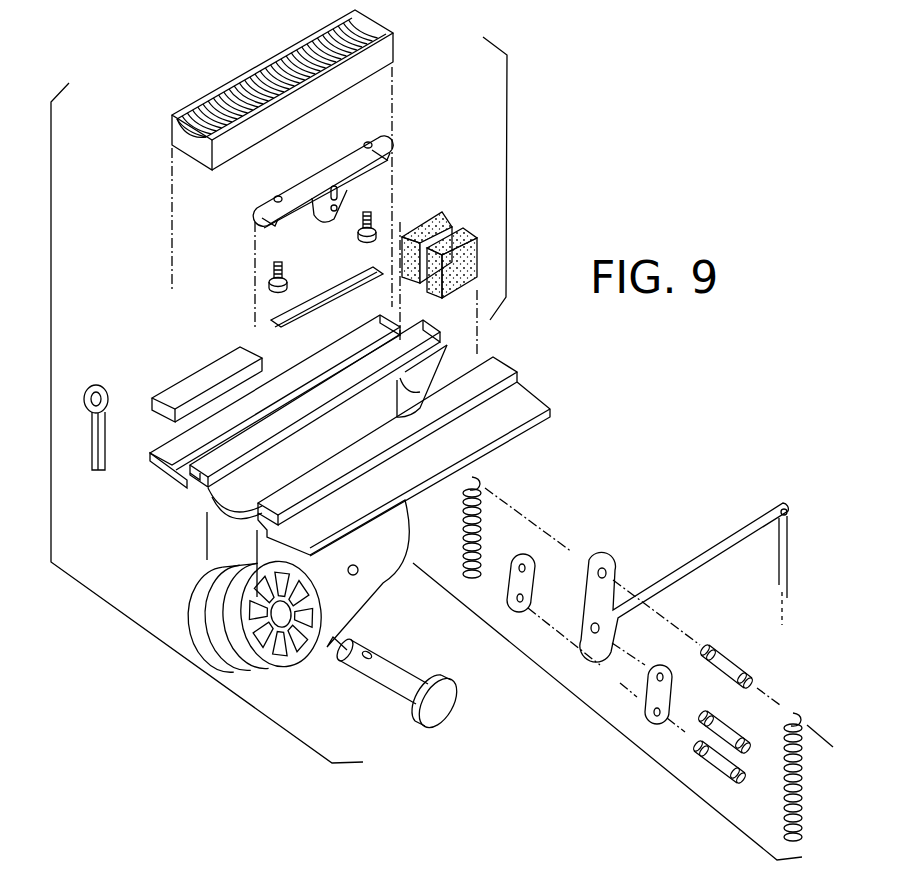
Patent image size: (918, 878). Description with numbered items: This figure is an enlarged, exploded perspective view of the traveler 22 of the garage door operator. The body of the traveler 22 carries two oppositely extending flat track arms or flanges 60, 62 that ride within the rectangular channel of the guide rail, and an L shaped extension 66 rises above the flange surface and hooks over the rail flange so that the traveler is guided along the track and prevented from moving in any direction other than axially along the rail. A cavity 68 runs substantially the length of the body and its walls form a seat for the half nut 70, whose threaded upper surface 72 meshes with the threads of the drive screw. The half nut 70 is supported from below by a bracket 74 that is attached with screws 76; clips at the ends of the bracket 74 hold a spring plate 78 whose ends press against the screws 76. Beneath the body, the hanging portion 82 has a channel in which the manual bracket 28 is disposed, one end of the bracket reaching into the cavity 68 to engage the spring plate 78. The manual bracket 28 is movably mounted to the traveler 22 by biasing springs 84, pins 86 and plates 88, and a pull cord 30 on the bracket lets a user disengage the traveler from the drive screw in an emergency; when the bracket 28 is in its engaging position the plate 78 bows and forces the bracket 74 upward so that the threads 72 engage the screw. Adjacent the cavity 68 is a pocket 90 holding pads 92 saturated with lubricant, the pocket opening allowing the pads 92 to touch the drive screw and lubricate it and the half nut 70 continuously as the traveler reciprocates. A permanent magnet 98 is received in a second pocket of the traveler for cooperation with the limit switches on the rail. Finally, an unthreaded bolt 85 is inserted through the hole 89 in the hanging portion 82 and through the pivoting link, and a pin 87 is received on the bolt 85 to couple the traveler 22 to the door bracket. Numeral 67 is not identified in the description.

The traveler 22 is at (90, 596).
The manual bracket 28 is at (702, 567).
The pull cord 30 is at (785, 558).
The flat track arm 60 is at (173, 458).
The flat track arm 62 is at (498, 433).
The L shaped extension 66 is at (212, 457).
The front rail 67 is at (343, 468).
The cavity 68 is at (203, 511).
The half nut 70 is at (253, 138).
The upper surface 72 is at (245, 82).
The bracket 74 is at (322, 171).
The screws 76 is at (285, 267).
The spring plate 78 is at (312, 312).
The hanging portion 82 is at (313, 657).
The biasing springs 84 is at (463, 528).
The unthreaded bolt 85 is at (397, 670).
The pins 86 is at (735, 667).
The pin 87 is at (106, 413).
The plates 88 is at (522, 588).
The hole 89 is at (280, 618).
The pocket 90 is at (452, 370).
The pads 92 is at (444, 213).
The permanent magnet 98 is at (202, 378).